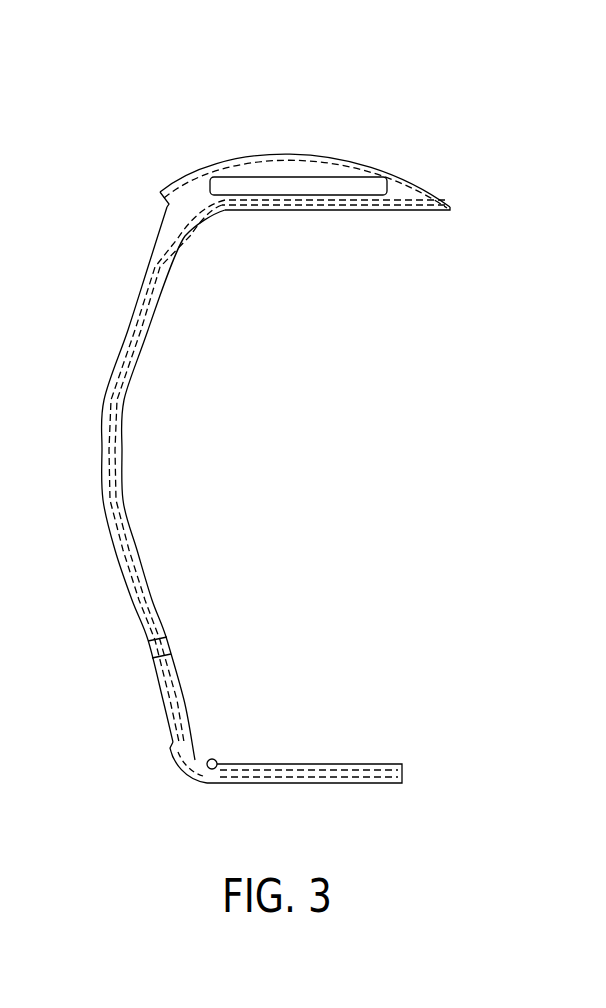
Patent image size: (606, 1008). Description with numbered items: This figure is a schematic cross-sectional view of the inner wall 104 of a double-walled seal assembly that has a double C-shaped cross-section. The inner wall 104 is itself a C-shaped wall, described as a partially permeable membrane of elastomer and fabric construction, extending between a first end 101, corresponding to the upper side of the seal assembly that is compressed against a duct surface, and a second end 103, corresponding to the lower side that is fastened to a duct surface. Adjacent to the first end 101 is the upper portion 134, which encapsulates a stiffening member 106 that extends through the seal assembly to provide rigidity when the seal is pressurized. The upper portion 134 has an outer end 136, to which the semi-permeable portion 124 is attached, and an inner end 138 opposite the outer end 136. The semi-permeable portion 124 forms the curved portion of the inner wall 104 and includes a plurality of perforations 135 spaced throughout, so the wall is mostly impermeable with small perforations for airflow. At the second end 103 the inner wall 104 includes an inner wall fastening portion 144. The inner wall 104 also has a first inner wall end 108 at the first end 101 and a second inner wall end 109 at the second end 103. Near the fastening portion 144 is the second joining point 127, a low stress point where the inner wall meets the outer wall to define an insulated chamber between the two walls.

The first end 101 is at (478, 113).
The second end 103 is at (472, 705).
The inner wall 104 is at (103, 157).
The stiffening member 106 is at (342, 178).
The first inner wall end 108 is at (442, 306).
The second inner wall end 109 is at (442, 584).
The semi-permeable portion 124 is at (196, 271).
The second joining point 127 is at (218, 761).
The upper portion 134 is at (200, 175).
The perforations 135 is at (112, 397).
The outer end 136 is at (165, 205).
The inner end 138 is at (450, 206).
The inner wall fastening portion 144 is at (302, 818).